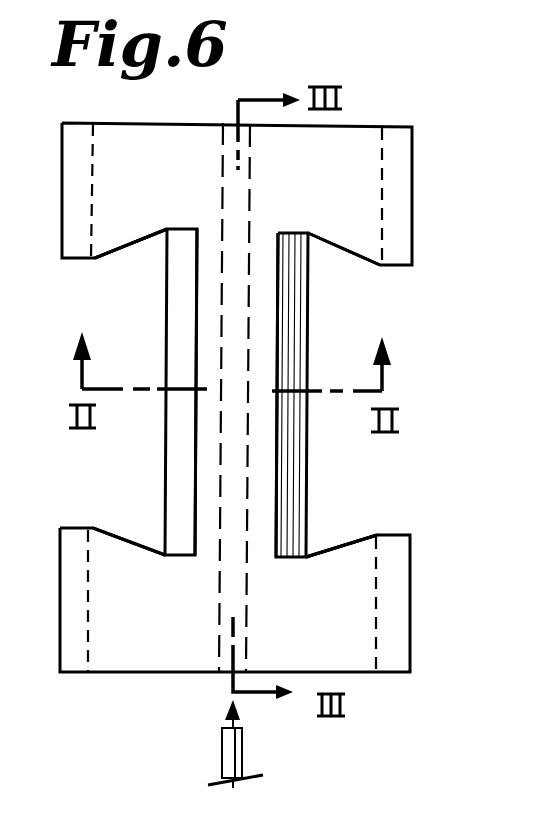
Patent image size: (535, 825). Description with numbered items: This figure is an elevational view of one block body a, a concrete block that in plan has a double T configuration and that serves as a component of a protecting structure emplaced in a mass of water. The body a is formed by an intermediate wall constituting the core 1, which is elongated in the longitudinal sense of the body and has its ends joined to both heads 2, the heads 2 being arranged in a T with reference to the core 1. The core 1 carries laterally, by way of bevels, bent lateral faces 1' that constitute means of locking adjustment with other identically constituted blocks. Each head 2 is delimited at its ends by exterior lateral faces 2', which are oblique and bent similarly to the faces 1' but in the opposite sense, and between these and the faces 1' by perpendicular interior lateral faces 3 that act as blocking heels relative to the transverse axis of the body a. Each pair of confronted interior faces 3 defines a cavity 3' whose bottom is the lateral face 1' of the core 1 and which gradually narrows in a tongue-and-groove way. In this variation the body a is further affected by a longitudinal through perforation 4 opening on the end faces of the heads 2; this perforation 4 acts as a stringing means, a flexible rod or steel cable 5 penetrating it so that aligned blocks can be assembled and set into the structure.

The core of block 1 is at (252, 393).
The bent lateral faces of the core 1' is at (237, 393).
The heads of block 2 is at (236, 397).
The exterior lateral faces of the heads 2' is at (235, 398).
The interior lateral faces of the heads 3 is at (233, 393).
The tongue and groove cavities 3' is at (249, 393).
The longitudinal through perforation 4 is at (222, 187).
The perforating block cable 5 is at (225, 752).
The body of block a is at (146, 355).